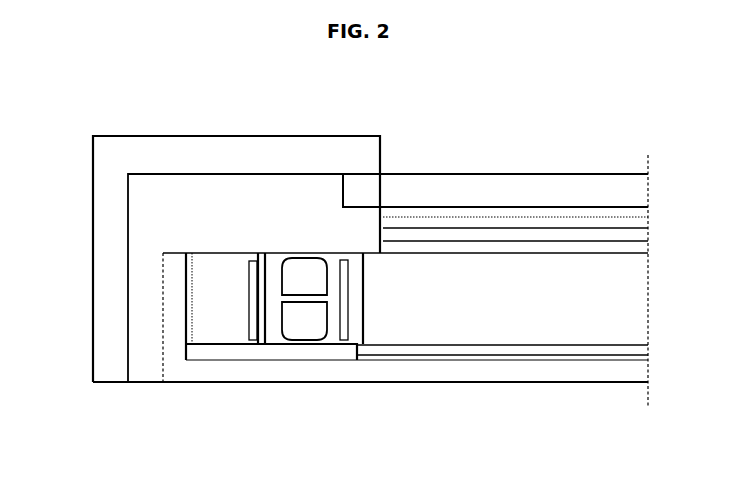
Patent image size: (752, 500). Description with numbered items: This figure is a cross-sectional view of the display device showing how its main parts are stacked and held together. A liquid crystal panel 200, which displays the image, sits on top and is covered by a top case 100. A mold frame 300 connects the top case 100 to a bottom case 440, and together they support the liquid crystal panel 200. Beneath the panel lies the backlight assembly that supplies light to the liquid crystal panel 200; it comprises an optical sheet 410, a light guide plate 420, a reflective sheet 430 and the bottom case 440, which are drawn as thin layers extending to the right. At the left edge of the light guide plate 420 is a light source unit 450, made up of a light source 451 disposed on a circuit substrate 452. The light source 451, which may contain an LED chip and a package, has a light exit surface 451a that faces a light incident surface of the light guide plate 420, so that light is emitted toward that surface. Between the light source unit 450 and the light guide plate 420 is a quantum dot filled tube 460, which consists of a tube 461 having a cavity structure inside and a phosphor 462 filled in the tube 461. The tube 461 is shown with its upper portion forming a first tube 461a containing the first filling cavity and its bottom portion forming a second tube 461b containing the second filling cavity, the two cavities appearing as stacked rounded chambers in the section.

The top case 100 is at (262, 151).
The liquid crystal panel 200 is at (531, 187).
The mold frame 300 is at (140, 206).
The optical sheet 410 is at (638, 233).
The light guide plate 420 is at (638, 290).
The reflective sheet 430 is at (638, 349).
The bottom case 440 is at (638, 372).
The light source unit 450 is at (243, 447).
The light source 451 is at (212, 332).
The light exit surface 451a is at (251, 342).
The circuit substrate 452 is at (196, 352).
The quantum dot filled tube 460 is at (415, 447).
The tube 461 is at (277, 335).
The first tube 461a is at (327, 333).
The second tube 461b is at (318, 279).
The phosphor 462 is at (303, 323).